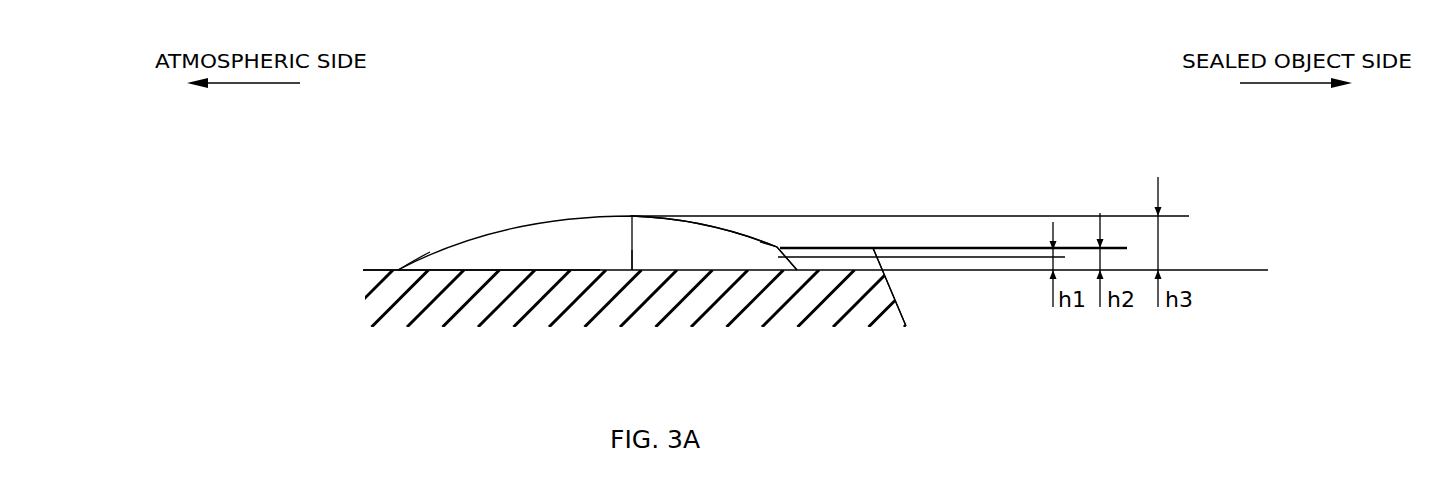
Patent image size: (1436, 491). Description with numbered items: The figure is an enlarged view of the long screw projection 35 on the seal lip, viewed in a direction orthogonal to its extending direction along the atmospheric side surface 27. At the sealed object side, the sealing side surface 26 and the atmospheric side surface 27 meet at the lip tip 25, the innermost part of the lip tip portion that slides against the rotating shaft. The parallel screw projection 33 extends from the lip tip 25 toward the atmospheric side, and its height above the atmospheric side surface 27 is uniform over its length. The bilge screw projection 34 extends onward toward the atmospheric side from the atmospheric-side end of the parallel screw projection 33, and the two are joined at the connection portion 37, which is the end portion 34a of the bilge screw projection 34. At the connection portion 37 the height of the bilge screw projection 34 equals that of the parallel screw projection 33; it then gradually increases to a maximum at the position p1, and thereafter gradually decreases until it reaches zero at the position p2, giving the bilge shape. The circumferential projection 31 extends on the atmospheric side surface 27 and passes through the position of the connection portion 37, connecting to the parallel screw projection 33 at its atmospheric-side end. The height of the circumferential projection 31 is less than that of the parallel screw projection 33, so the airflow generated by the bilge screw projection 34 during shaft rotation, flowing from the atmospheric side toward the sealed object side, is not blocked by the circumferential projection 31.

The lip tip 25 is at (884, 270).
The sealing side surface 26 is at (903, 303).
The atmospheric side surface 27 is at (383, 270).
The circumferential projection 31 is at (777, 250).
The parallel screw projection 33 is at (826, 247).
The bilge screw projection 34 is at (515, 240).
The end portion 34a is at (777, 247).
The long screw projection 35 is at (710, 164).
The connection portion 37 is at (777, 218).
The position p1 is at (632, 265).
The position p2 is at (398, 270).